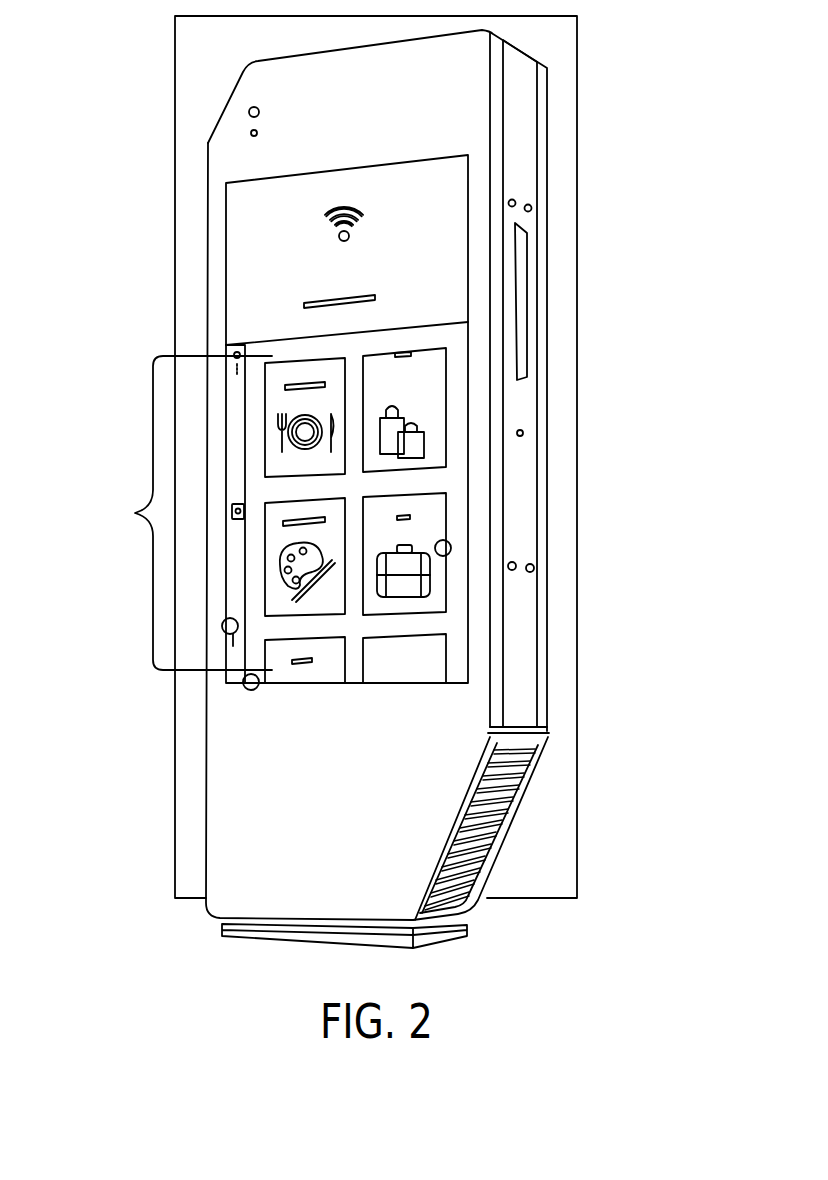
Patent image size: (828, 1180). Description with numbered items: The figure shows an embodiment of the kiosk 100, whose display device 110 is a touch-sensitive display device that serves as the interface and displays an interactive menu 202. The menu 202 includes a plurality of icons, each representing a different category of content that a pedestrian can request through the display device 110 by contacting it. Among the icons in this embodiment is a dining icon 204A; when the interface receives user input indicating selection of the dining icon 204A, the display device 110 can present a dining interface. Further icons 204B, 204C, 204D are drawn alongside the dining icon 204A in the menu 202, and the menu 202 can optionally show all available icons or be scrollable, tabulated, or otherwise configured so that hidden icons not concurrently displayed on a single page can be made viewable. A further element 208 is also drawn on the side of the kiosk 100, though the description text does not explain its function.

The kiosk 100 is at (228, 110).
The display device 110 is at (457, 175).
The interactive menu 202 is at (135, 513).
The dining icon 204A is at (307, 375).
The selectable icon (shopping) 204B is at (407, 352).
The selectable icon (arts) 204C is at (292, 600).
The selectable icon (travel) 204D is at (402, 597).
The side access panel 208 is at (527, 407).